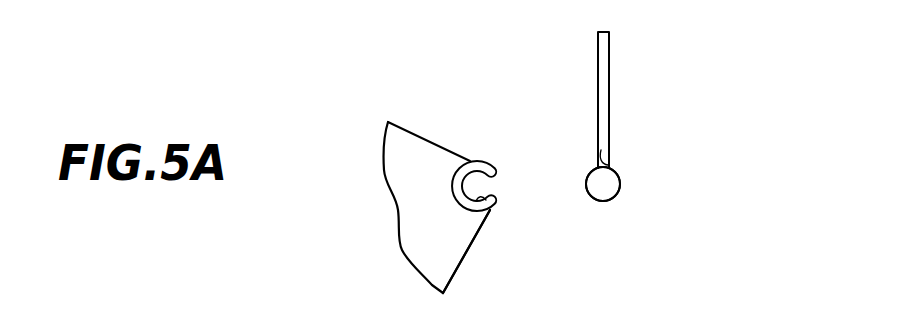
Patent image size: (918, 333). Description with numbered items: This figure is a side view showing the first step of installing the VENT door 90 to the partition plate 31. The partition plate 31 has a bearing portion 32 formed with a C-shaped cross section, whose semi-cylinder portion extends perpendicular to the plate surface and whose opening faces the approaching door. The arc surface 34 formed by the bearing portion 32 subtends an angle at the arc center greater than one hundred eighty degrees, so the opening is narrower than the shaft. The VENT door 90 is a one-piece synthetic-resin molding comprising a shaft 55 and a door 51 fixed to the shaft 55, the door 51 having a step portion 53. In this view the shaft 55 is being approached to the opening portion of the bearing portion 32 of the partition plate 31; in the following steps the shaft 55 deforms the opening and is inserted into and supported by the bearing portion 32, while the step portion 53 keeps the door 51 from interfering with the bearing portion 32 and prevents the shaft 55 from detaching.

The partition plate 31 is at (396, 106).
The bearing portion 32 is at (487, 158).
The arc surface 34 is at (493, 208).
The VENT door 90 is at (624, 45).
The door 51 is at (610, 88).
The step portion 53 is at (610, 165).
The shaft 55 is at (610, 183).